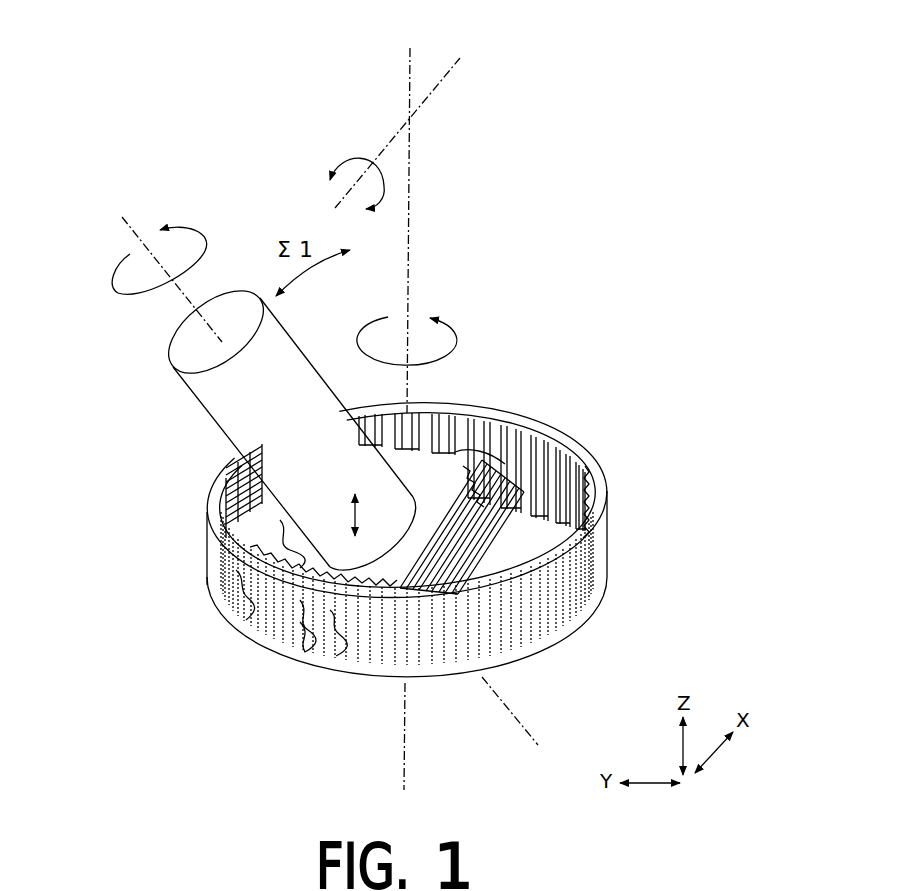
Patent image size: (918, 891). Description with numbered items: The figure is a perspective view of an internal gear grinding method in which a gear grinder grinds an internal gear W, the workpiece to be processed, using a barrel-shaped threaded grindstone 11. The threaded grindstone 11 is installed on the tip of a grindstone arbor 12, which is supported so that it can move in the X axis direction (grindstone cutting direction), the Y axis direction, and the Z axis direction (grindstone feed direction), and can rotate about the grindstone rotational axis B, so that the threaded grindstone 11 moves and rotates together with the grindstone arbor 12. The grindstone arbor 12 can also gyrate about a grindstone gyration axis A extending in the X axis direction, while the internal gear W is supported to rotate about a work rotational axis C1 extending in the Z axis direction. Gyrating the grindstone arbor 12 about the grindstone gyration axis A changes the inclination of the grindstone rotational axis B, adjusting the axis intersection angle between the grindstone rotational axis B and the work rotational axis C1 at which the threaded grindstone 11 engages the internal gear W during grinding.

The threaded grindstone 11 is at (448, 462).
The grindstone arbor 12 is at (228, 407).
The internal gear W is at (609, 540).
The grindstone gyration axis A is at (403, 123).
The grindstone rotational axis B is at (161, 266).
The work rotational axis C1 is at (407, 404).